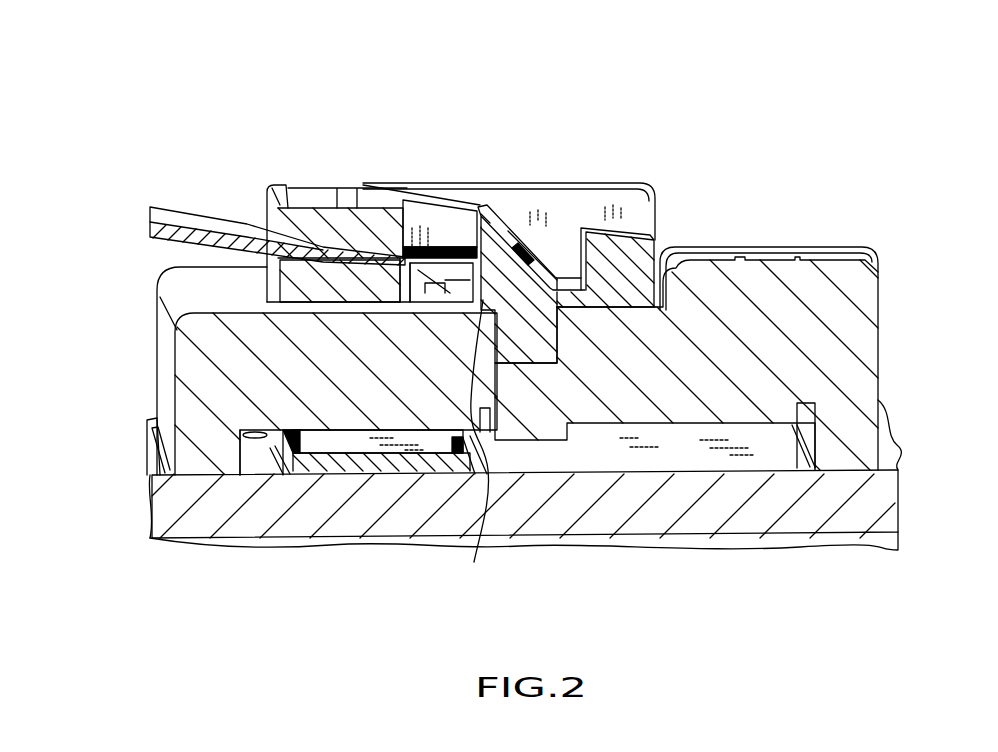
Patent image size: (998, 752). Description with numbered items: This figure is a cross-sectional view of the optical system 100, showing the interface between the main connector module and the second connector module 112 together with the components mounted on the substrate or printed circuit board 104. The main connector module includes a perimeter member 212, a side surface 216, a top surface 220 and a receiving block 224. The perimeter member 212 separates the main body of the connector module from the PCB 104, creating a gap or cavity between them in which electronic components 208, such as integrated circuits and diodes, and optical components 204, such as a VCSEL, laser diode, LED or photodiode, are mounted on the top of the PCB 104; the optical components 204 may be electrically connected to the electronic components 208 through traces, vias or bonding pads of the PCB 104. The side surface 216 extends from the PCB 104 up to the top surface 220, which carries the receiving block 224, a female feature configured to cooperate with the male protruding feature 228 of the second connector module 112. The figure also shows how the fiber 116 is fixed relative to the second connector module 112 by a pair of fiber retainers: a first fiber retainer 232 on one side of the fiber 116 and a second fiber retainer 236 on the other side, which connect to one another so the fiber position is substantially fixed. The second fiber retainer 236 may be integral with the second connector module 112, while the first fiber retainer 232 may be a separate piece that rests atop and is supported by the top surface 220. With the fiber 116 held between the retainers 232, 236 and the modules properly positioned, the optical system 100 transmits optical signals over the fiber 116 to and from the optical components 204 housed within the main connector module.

The optical system 100 is at (252, 130).
The substrate or Printed Circuit Board (PCB) 104 is at (888, 495).
The second connector module 112 is at (637, 170).
The fiber 116 is at (175, 210).
The optical components 204 is at (527, 470).
The electronic components 208 is at (378, 472).
The perimeter member 212 is at (185, 452).
The side surface 216 is at (163, 383).
The top surface 220 is at (197, 282).
The receiving block 224 is at (573, 337).
The protruding feature 228 is at (471, 446).
The first fiber retainer 232 is at (283, 272).
The second fiber retainer 236 is at (343, 220).